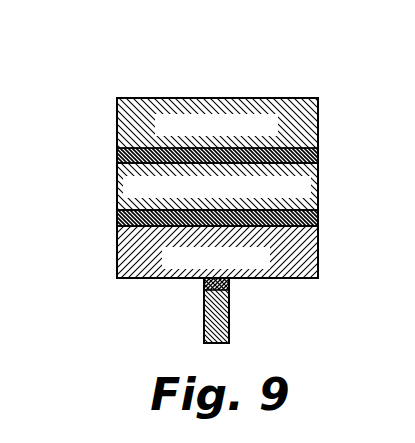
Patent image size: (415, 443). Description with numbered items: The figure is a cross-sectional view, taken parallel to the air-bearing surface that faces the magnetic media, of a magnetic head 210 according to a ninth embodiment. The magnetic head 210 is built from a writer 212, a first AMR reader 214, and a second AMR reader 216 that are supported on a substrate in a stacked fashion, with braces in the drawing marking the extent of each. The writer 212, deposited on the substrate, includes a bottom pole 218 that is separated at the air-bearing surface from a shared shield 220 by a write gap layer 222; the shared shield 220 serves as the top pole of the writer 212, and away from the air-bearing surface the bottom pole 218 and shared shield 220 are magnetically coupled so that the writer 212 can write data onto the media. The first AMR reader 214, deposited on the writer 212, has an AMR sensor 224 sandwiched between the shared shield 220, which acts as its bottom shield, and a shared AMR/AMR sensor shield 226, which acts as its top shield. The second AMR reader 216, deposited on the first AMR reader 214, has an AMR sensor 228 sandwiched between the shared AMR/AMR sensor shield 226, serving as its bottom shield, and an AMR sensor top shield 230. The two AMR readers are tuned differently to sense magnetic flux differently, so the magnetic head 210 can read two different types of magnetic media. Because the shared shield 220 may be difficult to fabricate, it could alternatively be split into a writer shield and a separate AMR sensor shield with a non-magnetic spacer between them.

The magnetic head 210 is at (316, 64).
The writer 212 is at (64, 230).
The first AMR reader 214 is at (83, 277).
The second AMR reader 216 is at (107, 210).
The bottom pole 218 is at (232, 320).
The shared shield 220 is at (318, 258).
The write gap layer 222 is at (238, 285).
The AMR sensor 224 is at (318, 232).
The shared AMR/AMR sensor shield 226 is at (318, 195).
The AMR sensor 228 is at (318, 171).
The AMR sensor top shield 230 is at (318, 122).